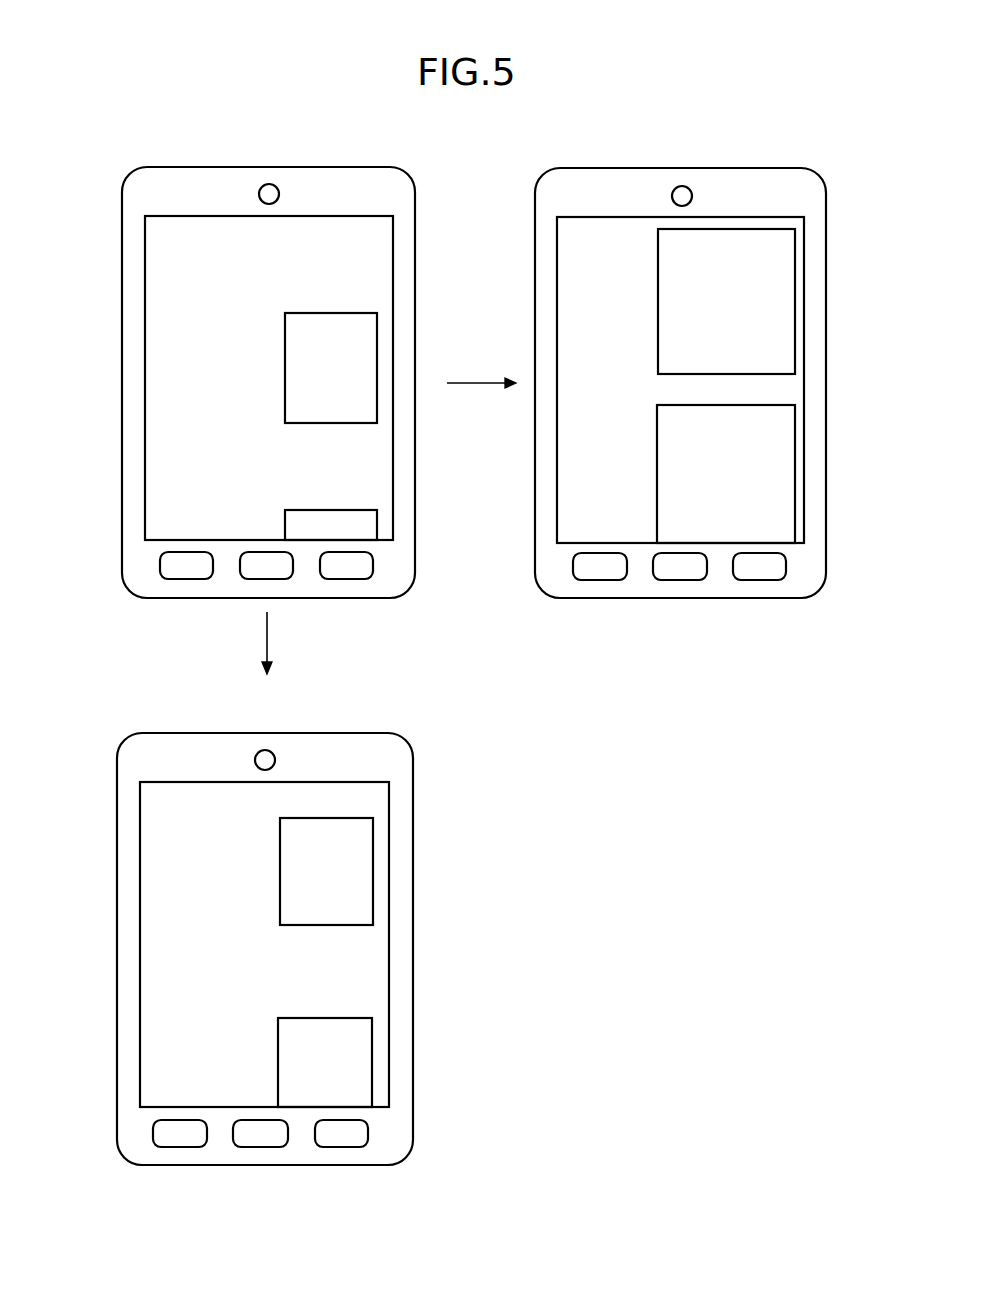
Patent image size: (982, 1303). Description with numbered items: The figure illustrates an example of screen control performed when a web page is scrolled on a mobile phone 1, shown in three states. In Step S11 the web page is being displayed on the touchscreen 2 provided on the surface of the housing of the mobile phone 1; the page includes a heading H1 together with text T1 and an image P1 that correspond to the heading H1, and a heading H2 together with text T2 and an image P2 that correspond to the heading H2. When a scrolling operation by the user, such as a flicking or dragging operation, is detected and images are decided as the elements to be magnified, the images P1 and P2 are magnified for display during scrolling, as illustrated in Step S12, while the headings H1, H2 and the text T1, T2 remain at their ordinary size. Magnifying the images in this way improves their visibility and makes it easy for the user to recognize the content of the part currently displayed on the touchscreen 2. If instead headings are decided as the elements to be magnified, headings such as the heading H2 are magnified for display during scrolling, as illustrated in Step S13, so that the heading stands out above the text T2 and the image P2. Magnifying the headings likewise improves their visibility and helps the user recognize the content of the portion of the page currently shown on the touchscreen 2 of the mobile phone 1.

The mobile phone 1 is at (350, 167).
The touchscreen 2 is at (298, 216).
The heading H1 is at (148, 229).
The text T1 is at (152, 312).
The heading H2 is at (148, 444).
The text T2 is at (148, 488).
The image P1 is at (377, 350).
The image P2 is at (377, 522).
The step S11 is at (190, 144).
The step S12 is at (605, 146).
The step S13 is at (186, 711).